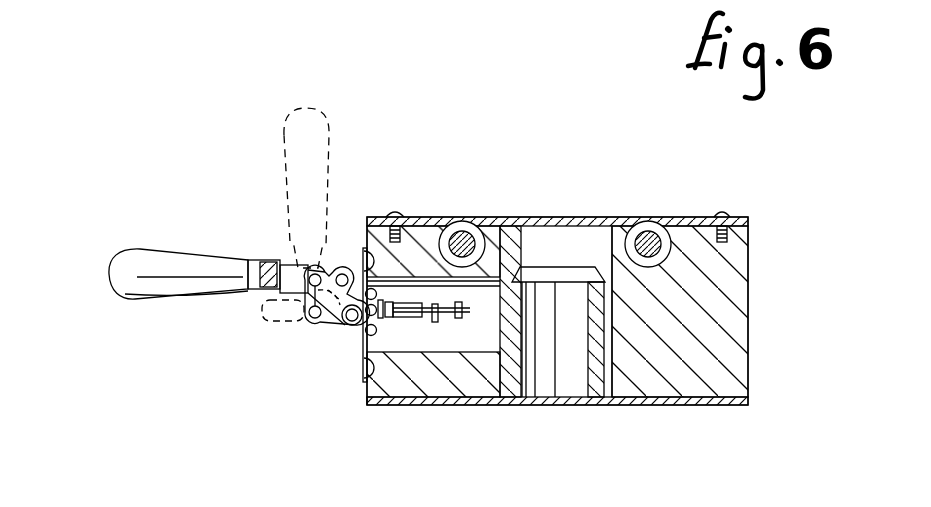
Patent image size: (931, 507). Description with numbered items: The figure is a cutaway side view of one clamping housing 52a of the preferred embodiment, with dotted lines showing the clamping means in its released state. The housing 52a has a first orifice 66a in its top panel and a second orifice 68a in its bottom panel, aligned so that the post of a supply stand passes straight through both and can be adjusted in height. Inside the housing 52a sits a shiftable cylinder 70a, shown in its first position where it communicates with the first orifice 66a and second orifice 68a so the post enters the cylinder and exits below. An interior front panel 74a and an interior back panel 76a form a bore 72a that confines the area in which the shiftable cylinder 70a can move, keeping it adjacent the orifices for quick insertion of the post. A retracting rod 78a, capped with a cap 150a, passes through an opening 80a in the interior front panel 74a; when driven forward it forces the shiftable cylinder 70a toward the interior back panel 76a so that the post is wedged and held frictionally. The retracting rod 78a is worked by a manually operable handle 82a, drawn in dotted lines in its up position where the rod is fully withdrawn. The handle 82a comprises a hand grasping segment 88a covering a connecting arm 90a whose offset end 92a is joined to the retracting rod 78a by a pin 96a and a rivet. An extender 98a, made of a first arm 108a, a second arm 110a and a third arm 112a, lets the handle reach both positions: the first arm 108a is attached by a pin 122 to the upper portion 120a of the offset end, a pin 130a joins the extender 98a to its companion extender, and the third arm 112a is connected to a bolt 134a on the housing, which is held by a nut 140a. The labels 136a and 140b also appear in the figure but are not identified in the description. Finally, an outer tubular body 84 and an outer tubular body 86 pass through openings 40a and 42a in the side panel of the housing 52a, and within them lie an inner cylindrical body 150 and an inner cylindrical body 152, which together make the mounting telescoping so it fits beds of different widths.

The manually operable handle 82a is at (137, 187).
The hand grasping segment 88a is at (150, 262).
The connecting arm 90a is at (263, 264).
The first arm 108a is at (306, 262).
The upper portion 120a is at (312, 268).
The pin 122 is at (283, 305).
The extender 98a is at (333, 262).
The second arm 110a is at (344, 270).
The pin 130a is at (364, 248).
The bolt 134a is at (363, 300).
The offset end 92a is at (307, 323).
The pin 96a is at (313, 322).
The pin 140b is at (330, 323).
The pivot pin 136a is at (347, 325).
The third arm 112a is at (352, 326).
The inner cylindrical body 152 is at (463, 217).
The outer tubular body 86 is at (477, 217).
The opening 42a is at (487, 217).
The opening 40a is at (672, 218).
The first orifice 66a is at (578, 218).
The shiftable cylinder 70a is at (562, 268).
The bore 72a is at (572, 268).
The inner cylindrical body 150 is at (648, 217).
The outer tubular body 84 is at (660, 217).
The housing 52a is at (738, 282).
The cap 150a is at (430, 310).
The nut 140a is at (370, 405).
The retracting rod 78a is at (467, 405).
The interior front panel 74a is at (490, 312).
The opening 80a is at (498, 350).
The second orifice 68a is at (561, 405).
The interior back panel 76a is at (607, 359).